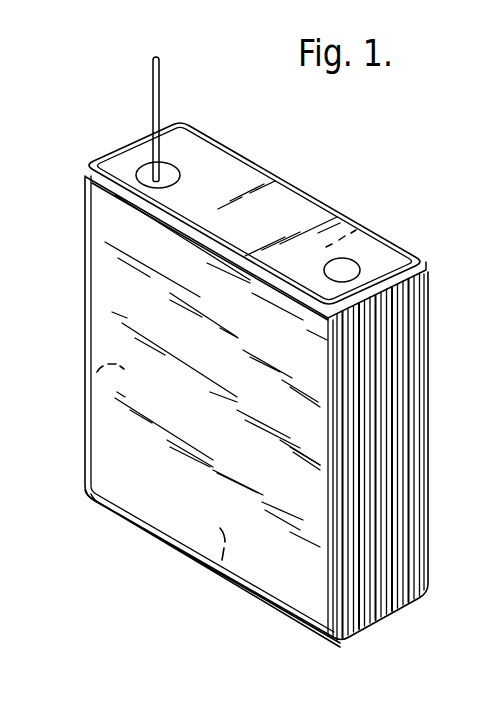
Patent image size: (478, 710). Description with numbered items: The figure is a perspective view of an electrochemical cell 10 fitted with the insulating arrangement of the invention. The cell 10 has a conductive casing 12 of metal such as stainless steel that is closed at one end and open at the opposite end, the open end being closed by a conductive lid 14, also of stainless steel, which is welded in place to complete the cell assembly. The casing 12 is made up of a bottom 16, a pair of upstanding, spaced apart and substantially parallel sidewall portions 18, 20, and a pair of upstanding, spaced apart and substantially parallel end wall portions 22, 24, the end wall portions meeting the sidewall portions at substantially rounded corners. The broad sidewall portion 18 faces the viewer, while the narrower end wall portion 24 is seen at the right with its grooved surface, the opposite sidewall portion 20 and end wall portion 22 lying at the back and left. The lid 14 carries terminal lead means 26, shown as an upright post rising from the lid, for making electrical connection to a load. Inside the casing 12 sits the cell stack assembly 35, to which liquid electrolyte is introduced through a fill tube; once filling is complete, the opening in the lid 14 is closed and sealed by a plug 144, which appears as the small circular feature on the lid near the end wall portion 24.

The electrochemical cell 10 is at (110, 132).
The casing 12 is at (122, 290).
The lid 14 is at (297, 195).
The bottom 16 is at (217, 577).
The sidewall portion 18 is at (173, 512).
The sidewall portion 20 is at (360, 229).
The end wall portion 22 is at (94, 374).
The end wall portion 24 is at (412, 572).
The terminal lead means 26 is at (162, 87).
The plug 144 is at (350, 267).
The cell stack assembly 35 is at (462, 660).